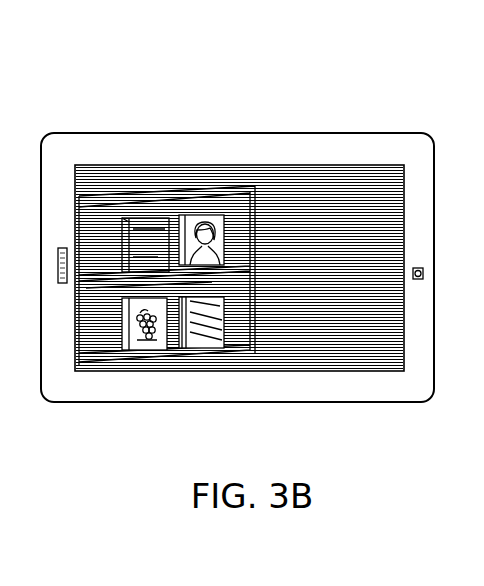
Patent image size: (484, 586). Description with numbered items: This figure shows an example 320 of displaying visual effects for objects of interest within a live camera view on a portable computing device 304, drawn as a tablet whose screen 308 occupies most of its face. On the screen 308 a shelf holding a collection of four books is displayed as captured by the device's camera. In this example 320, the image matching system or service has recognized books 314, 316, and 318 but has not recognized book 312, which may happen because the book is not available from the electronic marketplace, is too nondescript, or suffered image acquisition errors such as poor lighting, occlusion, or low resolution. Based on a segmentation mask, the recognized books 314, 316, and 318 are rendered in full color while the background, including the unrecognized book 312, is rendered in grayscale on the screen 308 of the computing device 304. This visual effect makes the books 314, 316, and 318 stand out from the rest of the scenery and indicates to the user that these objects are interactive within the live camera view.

The example 320 is at (408, 99).
The computing device 304 is at (287, 133).
The screen 308 is at (376, 372).
The book 312 is at (140, 217).
The book 314 is at (201, 213).
The book 316 is at (151, 355).
The book 318 is at (216, 358).